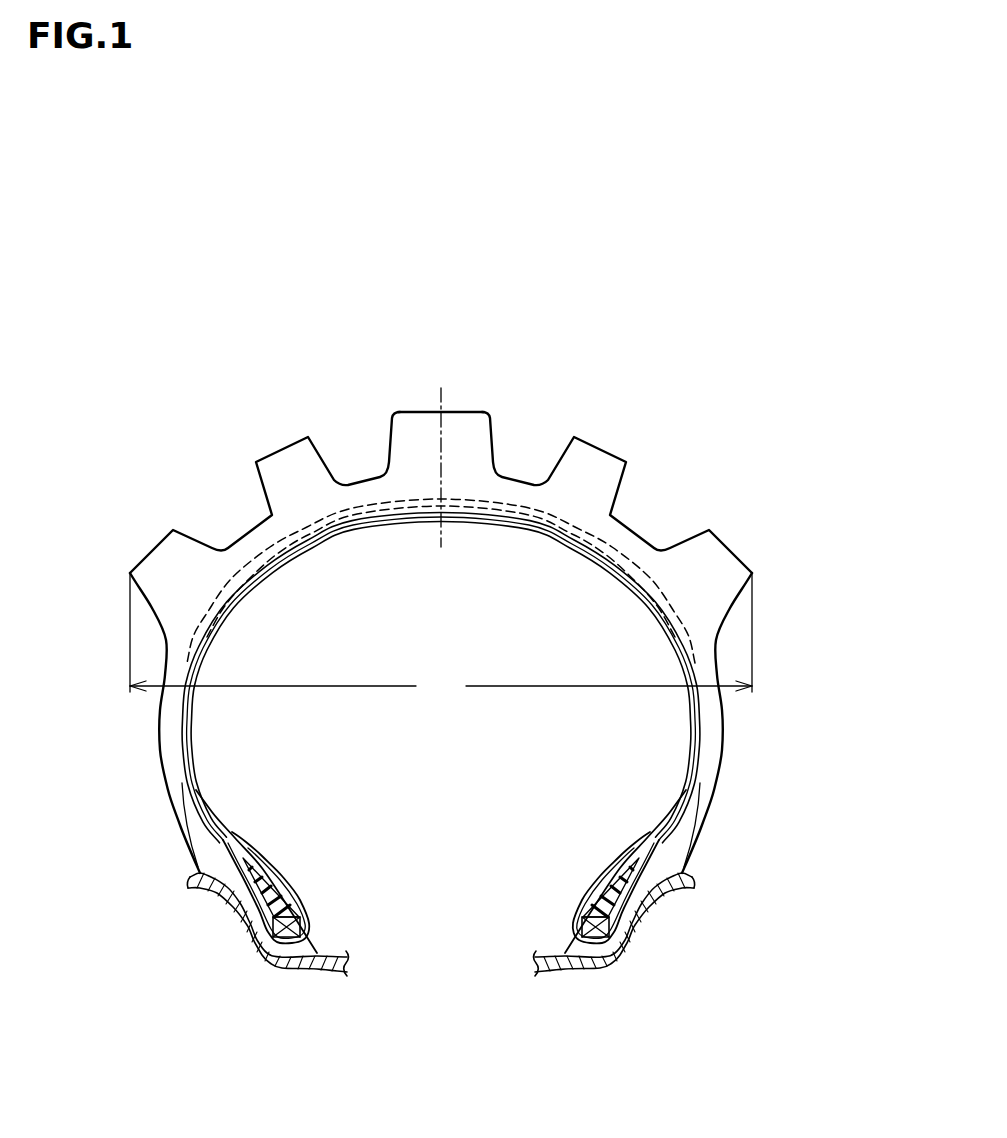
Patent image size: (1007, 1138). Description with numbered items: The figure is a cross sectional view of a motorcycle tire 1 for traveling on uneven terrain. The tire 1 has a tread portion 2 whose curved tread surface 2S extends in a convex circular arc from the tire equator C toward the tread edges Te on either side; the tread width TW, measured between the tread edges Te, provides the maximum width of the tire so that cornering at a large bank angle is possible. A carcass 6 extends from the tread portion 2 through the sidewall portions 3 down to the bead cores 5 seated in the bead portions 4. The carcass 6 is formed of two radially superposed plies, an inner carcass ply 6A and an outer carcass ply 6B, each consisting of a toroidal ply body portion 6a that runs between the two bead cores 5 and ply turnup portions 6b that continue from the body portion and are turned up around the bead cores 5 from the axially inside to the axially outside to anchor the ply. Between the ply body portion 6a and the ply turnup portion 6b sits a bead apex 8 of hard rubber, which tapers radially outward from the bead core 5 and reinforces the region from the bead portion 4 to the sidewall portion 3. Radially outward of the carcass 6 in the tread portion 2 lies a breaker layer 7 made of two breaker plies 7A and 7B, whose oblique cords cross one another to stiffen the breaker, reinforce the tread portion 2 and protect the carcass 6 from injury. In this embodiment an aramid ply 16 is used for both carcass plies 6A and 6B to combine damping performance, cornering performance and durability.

The motorcycle tire 1 is at (661, 358).
The tread portion 2 is at (413, 427).
The tread surface 2S is at (467, 423).
The sidewall portion 3 is at (739, 744).
The bead portion 4 is at (563, 886).
The bead core 5 is at (586, 936).
The carcass 6 is at (365, 730).
The inner carcass ply 6A is at (195, 785).
The outer carcass ply 6B is at (188, 755).
The aramid ply 16 is at (441, 678).
The ply body portion 6a is at (698, 767).
The ply turnup portion 6b is at (691, 815).
The breaker layer 7 is at (507, 352).
The breaker ply 7A is at (580, 537).
The breaker ply 7B is at (517, 508).
The bead apex 8 is at (621, 903).
The tire equator C is at (442, 530).
The tread edge Te is at (127, 571).
The tread width TW is at (441, 689).